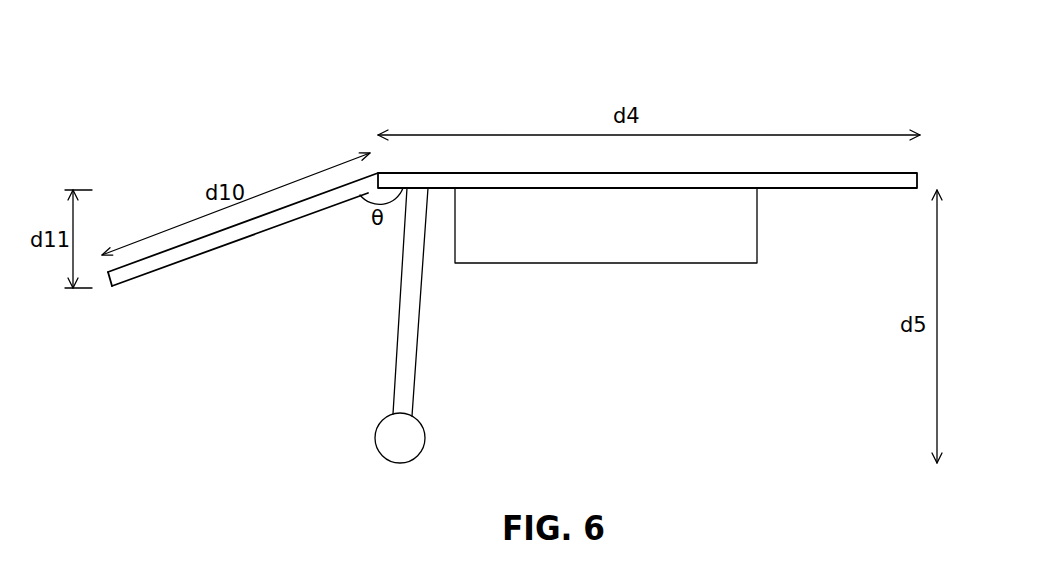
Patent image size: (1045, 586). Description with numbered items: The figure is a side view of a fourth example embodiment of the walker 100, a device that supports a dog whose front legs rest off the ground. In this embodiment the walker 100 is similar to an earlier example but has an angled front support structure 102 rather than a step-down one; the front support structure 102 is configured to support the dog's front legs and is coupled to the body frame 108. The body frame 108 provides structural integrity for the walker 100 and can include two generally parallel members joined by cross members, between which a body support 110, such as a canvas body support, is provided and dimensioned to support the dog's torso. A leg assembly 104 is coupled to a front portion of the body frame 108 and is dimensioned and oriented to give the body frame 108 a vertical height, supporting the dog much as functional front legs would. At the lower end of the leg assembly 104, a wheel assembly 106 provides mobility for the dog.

The walker 100 is at (388, 70).
The front support structure 102 is at (378, 312).
The leg assembly 104 is at (407, 313).
The wheel assembly 106 is at (415, 437).
The body frame 108 is at (632, 190).
The body support 110 is at (555, 238).